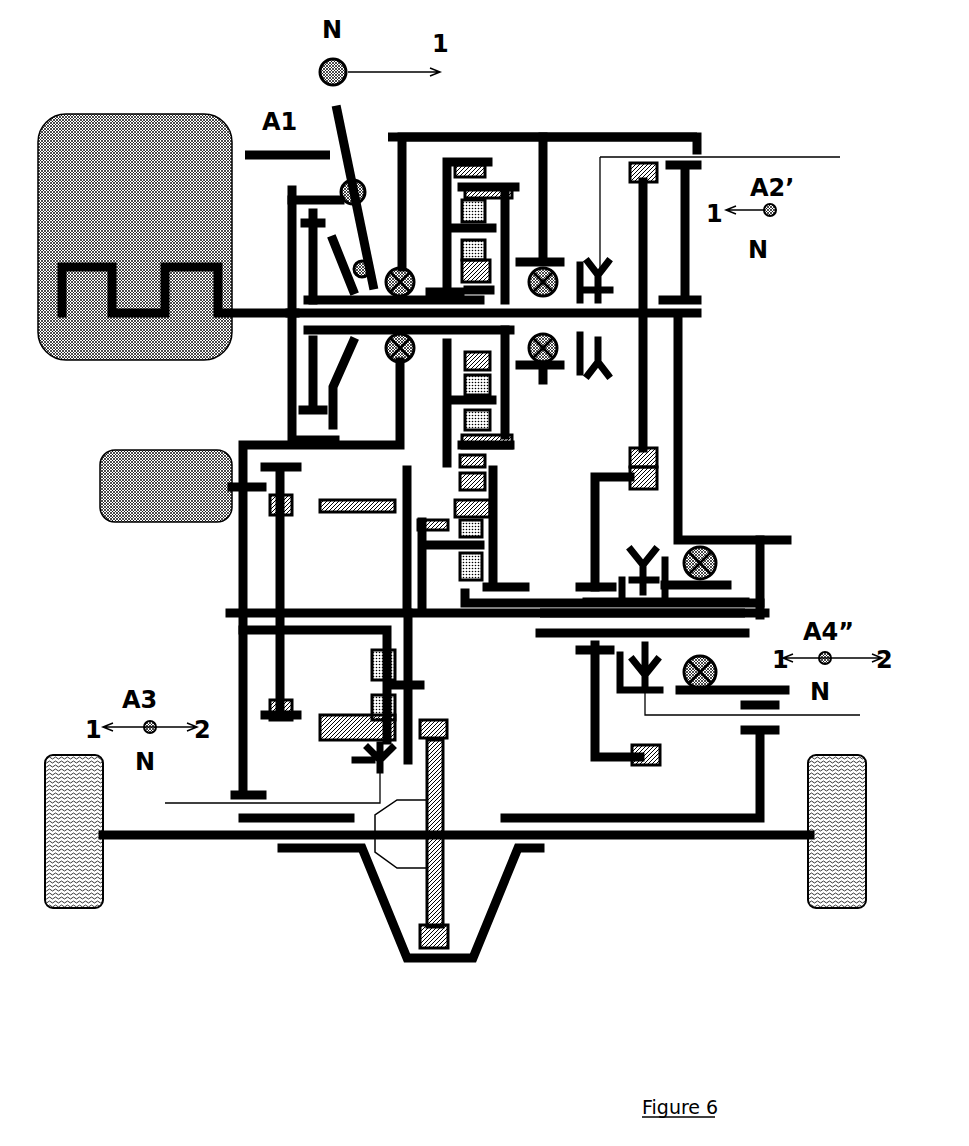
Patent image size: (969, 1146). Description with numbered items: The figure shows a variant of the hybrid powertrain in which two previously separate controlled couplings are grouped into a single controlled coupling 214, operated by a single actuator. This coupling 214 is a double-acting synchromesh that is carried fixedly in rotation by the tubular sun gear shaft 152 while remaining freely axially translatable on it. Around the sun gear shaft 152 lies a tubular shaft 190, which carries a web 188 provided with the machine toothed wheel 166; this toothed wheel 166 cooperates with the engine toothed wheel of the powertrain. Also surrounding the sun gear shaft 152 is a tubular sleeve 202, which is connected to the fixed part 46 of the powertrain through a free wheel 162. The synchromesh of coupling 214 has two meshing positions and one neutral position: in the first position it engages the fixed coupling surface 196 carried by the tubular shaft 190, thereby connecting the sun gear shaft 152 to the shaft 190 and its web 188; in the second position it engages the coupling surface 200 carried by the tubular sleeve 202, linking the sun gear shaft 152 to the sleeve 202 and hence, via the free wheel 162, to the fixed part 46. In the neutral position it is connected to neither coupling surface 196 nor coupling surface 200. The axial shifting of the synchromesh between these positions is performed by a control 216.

The fixed part 46 is at (573, 117).
The web 188 is at (592, 497).
The tubular shaft 190 is at (585, 583).
The machine toothed wheel 166 is at (652, 487).
The controlled coupling 214 is at (661, 525).
The free wheel 162 is at (749, 556).
The tubular sleeve 202 is at (730, 585).
The tubular sun gear shaft 152 is at (568, 638).
The fixed coupling surface 196 is at (618, 690).
The coupling surface 200 is at (675, 692).
The control 216 is at (850, 715).